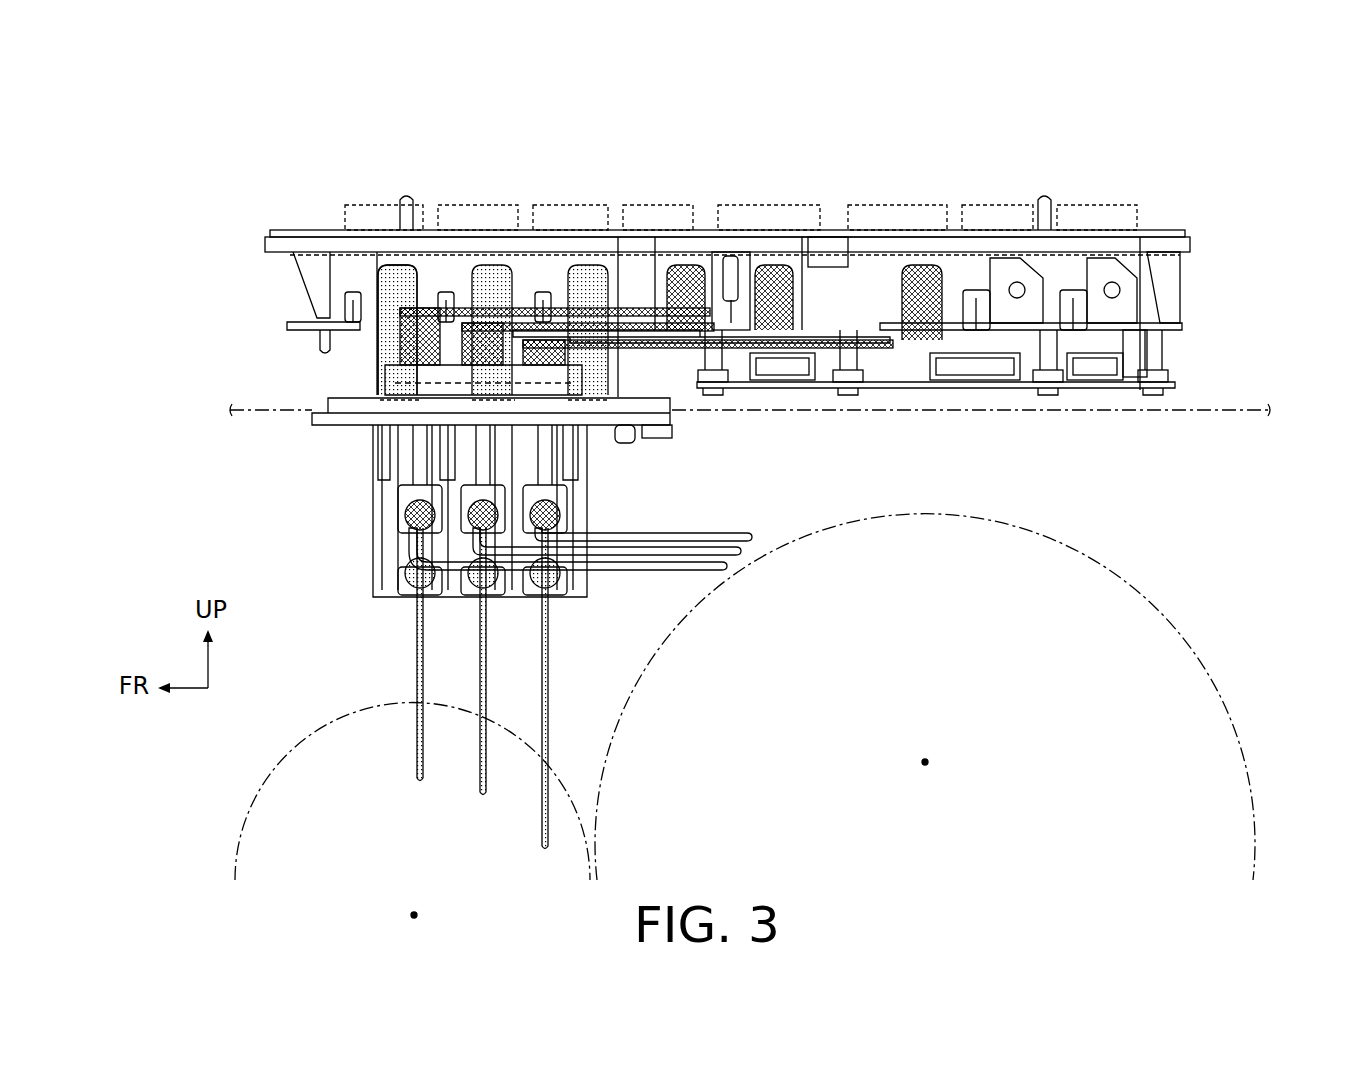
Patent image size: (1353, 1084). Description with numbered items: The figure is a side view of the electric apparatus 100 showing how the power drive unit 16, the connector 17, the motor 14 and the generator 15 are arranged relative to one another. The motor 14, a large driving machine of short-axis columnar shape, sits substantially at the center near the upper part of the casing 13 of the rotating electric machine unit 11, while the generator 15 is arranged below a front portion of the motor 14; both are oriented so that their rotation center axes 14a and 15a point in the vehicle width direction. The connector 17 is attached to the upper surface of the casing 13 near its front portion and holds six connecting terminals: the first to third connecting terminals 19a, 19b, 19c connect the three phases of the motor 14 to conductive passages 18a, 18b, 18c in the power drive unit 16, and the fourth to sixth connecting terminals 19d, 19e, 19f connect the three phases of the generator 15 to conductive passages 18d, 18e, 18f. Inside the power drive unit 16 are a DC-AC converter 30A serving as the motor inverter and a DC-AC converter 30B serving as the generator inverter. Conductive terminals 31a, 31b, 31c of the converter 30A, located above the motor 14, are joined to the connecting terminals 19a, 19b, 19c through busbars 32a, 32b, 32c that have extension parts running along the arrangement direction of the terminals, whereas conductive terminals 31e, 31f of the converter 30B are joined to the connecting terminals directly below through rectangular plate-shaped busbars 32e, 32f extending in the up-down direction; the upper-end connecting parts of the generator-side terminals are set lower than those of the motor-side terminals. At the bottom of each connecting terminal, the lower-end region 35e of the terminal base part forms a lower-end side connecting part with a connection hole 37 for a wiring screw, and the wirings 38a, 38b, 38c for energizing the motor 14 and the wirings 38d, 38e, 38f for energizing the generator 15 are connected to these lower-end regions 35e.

The electric apparatus 100 is at (1080, 170).
The rotating electric machine unit 11 is at (1218, 410).
The casing 13 is at (1185, 410).
The motor 14 is at (1233, 630).
The rotation center axis 14a is at (925, 765).
The generator 15 is at (235, 855).
The rotation center axis 15a is at (414, 912).
The power drive unit 16 is at (1173, 222).
The connector 17 is at (320, 392).
The conductive passage 18a is at (688, 270).
The conductive passage 18b is at (770, 270).
The conductive passage 18c is at (915, 262).
The conductive passage 18d is at (390, 284).
The conductive passage 18e is at (483, 268).
The conductive passage 18f is at (600, 270).
The first connecting terminal 19a is at (415, 450).
The second connecting terminal 19b is at (485, 460).
The third connecting terminal 19c is at (550, 455).
The fourth connecting terminal 19d is at (405, 565).
The fifth connecting terminal 19e is at (425, 590).
The sixth connecting terminal 19f is at (470, 580).
The DC-AC converter 30A is at (950, 112).
The DC-AC converter 30B is at (615, 112).
The conductive terminal 31a is at (708, 233).
The conductive terminal 31b is at (790, 232).
The conductive terminal 31c is at (908, 240).
The conductive terminal 31e is at (466, 269).
The conductive terminal 31f is at (578, 268).
The busbar 32a is at (645, 318).
The busbar 32b is at (735, 325).
The busbar 32c is at (887, 330).
The busbar 32e is at (503, 268).
The busbar 32f is at (635, 275).
The lower-end region 35e is at (555, 497).
The connection hole 37 is at (553, 516).
The wiring 38a is at (692, 570).
The wiring 38b is at (734, 553).
The wiring 38c is at (747, 538).
The wiring 38d is at (417, 755).
The wiring 38e is at (480, 765).
The wiring 38f is at (542, 805).